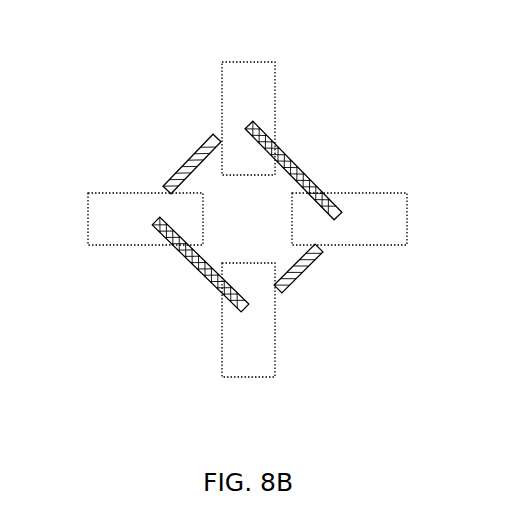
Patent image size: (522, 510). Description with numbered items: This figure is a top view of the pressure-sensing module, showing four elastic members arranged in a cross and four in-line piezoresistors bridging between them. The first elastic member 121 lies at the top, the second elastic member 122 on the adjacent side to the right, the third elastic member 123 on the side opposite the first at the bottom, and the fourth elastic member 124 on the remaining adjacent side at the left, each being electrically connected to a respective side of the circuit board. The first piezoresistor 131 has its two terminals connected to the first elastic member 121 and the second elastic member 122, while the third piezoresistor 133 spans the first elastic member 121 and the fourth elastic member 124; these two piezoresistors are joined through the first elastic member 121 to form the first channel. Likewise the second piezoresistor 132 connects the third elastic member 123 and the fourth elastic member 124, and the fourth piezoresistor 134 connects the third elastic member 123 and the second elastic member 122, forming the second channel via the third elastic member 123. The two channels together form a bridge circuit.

The first elastic member 121 is at (252, 72).
The second elastic member 122 is at (392, 218).
The third elastic member 123 is at (248, 362).
The fourth elastic member 124 is at (105, 218).
The first piezoresistor 131 is at (304, 177).
The second piezoresistor 132 is at (197, 268).
The third piezoresistor 133 is at (178, 172).
The fourth piezoresistor 134 is at (299, 269).